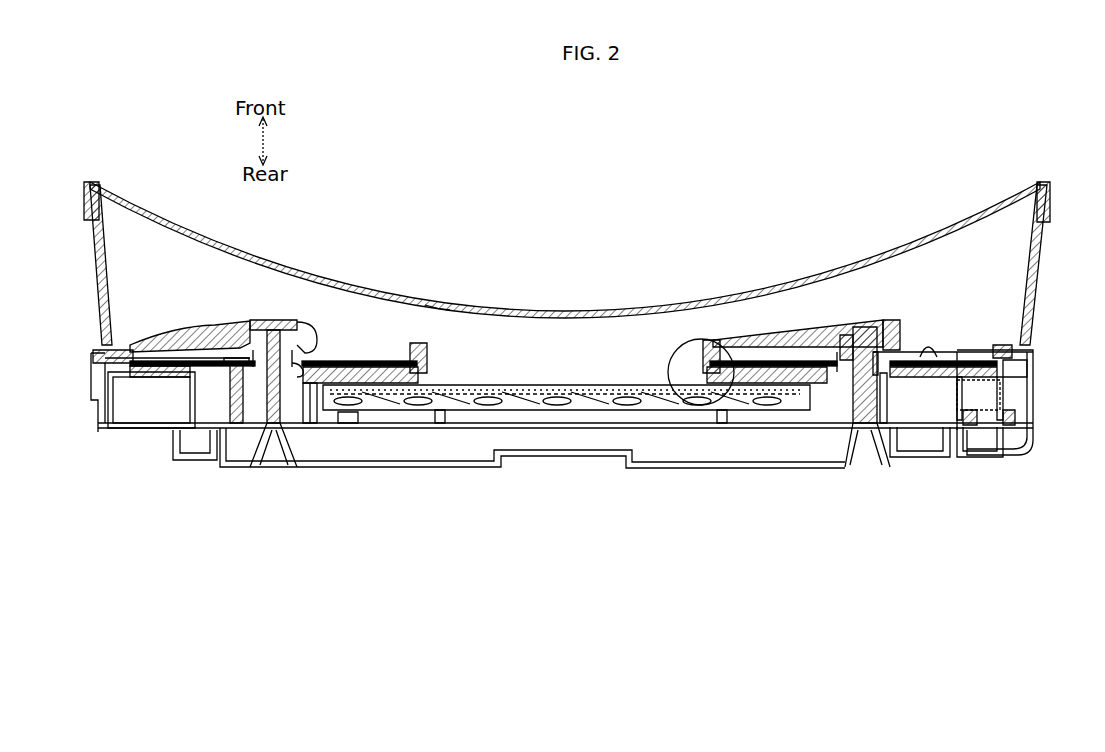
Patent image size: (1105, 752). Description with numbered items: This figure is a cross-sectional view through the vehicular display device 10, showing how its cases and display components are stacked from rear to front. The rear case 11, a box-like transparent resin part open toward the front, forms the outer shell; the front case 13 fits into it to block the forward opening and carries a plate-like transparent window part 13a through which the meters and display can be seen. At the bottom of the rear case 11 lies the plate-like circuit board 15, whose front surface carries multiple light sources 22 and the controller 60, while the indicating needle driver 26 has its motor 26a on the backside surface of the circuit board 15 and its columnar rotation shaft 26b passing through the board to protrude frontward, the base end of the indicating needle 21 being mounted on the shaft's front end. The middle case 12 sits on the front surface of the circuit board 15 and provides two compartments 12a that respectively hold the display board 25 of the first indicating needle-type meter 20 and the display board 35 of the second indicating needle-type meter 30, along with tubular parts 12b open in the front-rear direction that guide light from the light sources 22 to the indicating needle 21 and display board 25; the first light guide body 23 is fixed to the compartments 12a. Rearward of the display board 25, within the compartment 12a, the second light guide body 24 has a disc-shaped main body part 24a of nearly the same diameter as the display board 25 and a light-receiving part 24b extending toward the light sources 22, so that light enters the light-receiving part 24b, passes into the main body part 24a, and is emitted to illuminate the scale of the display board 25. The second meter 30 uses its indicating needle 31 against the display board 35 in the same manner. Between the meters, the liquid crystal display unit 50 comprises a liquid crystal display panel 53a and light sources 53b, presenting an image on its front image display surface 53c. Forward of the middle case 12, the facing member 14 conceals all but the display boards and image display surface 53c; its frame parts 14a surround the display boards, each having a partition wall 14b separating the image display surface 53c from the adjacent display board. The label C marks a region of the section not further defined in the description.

The vehicular display device 10 is at (986, 165).
The rear case 11 is at (110, 445).
The middle case 12 is at (920, 445).
The compartment 12a is at (332, 360).
The tubular part 12b is at (172, 445).
The front case 13 is at (1045, 180).
The window part 13a is at (437, 300).
The facing member 14 is at (1028, 322).
The frame part 14a is at (125, 350).
The partition wall 14b is at (428, 352).
The circuit board 15 is at (197, 450).
The first indicating needle-type meter 20 is at (778, 305).
The indicating needle 21 is at (810, 330).
The light source 22 is at (288, 442).
The first light guide body 23 is at (440, 418).
The second light guide body 24 is at (355, 360).
The main body part 24a is at (905, 360).
The light-receiving part 24b is at (1002, 400).
The display board 25 is at (935, 352).
The indicating needle driver 26 is at (248, 445).
The motor 26a is at (880, 445).
The rotation shaft 26b is at (845, 355).
The second indicating needle-type meter 30 is at (292, 300).
The indicating needle 31 is at (225, 335).
The display board 35 is at (380, 365).
The liquid crystal display unit 50 is at (630, 358).
The liquid crystal display panel 53a is at (565, 393).
The light source 53b is at (410, 470).
The image display surface 53c is at (483, 380).
The controller 60 is at (348, 420).
The center region C is at (688, 340).